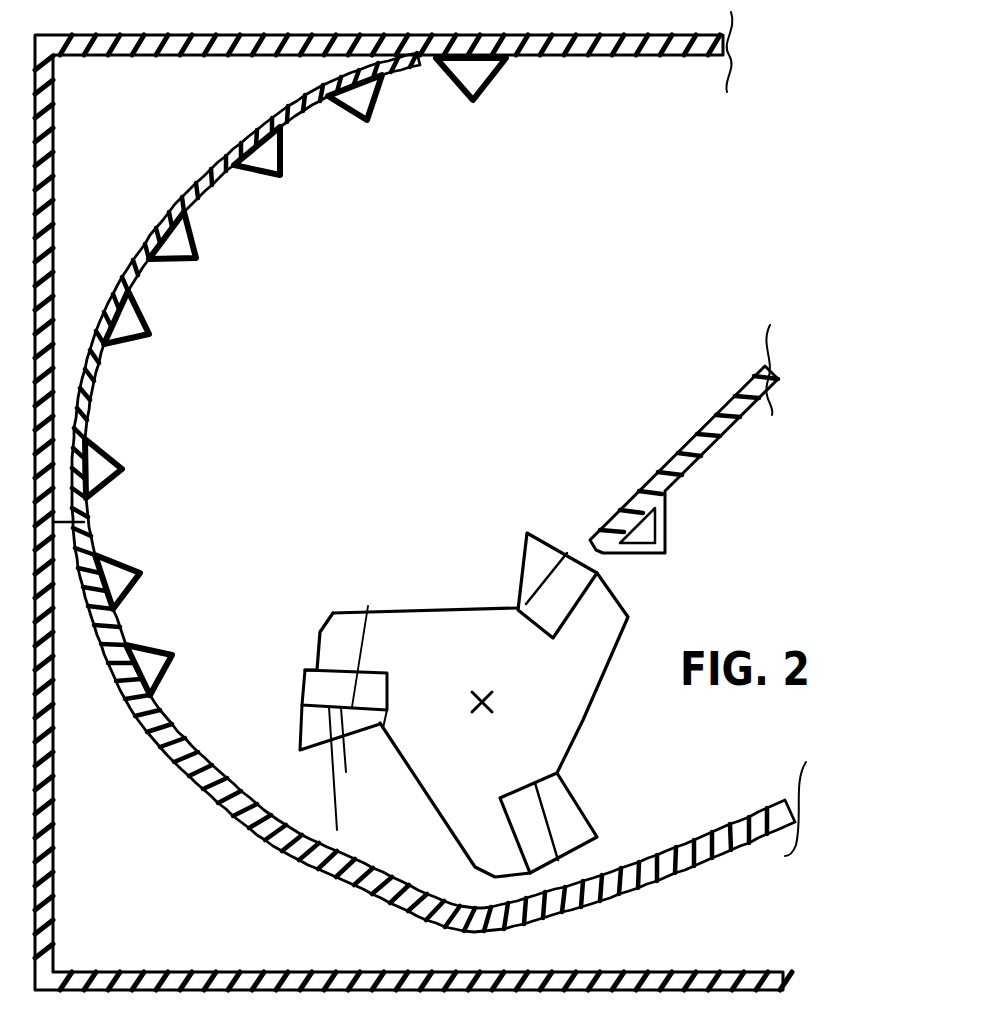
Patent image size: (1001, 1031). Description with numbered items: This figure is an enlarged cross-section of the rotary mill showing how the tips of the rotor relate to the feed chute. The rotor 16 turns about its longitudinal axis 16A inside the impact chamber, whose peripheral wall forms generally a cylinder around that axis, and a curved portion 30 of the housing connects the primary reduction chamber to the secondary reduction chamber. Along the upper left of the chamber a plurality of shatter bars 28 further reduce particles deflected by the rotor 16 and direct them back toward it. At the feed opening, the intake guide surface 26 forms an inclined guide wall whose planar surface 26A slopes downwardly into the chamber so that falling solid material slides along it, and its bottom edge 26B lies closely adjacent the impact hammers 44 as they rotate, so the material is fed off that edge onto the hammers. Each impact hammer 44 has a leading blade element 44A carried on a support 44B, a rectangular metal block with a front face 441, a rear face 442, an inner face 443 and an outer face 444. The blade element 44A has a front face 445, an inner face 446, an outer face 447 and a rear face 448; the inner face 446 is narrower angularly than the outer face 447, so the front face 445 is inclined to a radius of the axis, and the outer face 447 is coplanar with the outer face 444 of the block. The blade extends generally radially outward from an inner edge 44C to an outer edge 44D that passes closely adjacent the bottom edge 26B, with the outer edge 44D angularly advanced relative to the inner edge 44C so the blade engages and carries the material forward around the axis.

The rotor 16 is at (425, 704).
The longitudinal axis 16A is at (468, 690).
The intake guide surface 26 is at (665, 407).
The planar surface 26A is at (704, 420).
The bottom edge 26B is at (591, 538).
The shatter bars 28 is at (368, 128).
The curved portion 30 is at (428, 898).
The impact hammer 44 is at (356, 701).
The leading blade element 44A is at (307, 733).
The support 44B is at (313, 687).
The inner edge 44C is at (388, 727).
The outer edge 44D is at (323, 742).
The front face 441 is at (358, 707).
The rear face 442 is at (332, 620).
The inner face 443 is at (388, 684).
The outer face 444 is at (307, 670).
The front face 445 is at (346, 770).
The inner face 446 is at (388, 720).
The outer face 447 is at (310, 732).
The rear face 448 is at (354, 646).